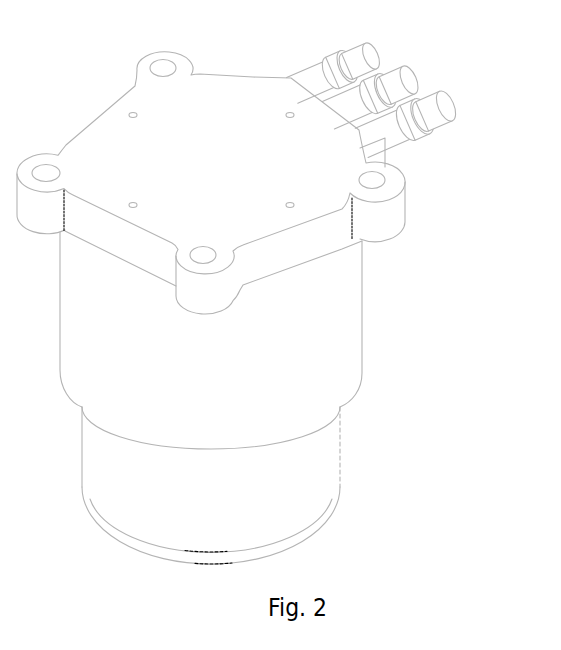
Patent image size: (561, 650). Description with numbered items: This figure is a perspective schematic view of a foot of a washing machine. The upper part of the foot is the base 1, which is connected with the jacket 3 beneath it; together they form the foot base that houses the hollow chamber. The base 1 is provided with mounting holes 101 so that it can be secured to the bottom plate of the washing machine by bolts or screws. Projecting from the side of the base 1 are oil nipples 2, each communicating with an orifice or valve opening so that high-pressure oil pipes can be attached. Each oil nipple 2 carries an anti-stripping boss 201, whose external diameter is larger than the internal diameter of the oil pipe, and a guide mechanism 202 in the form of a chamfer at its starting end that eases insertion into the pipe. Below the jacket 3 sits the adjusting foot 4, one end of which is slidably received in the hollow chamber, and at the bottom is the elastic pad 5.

The base 1 is at (198, 153).
The mounting hole 101 is at (212, 250).
The oil nipple 2 is at (424, 113).
The anti-stripping boss 201 is at (422, 122).
The guide mechanism 202 is at (437, 100).
The jacket 3 is at (305, 335).
The adjusting foot 4 is at (323, 430).
The elastic pad 5 is at (328, 512).